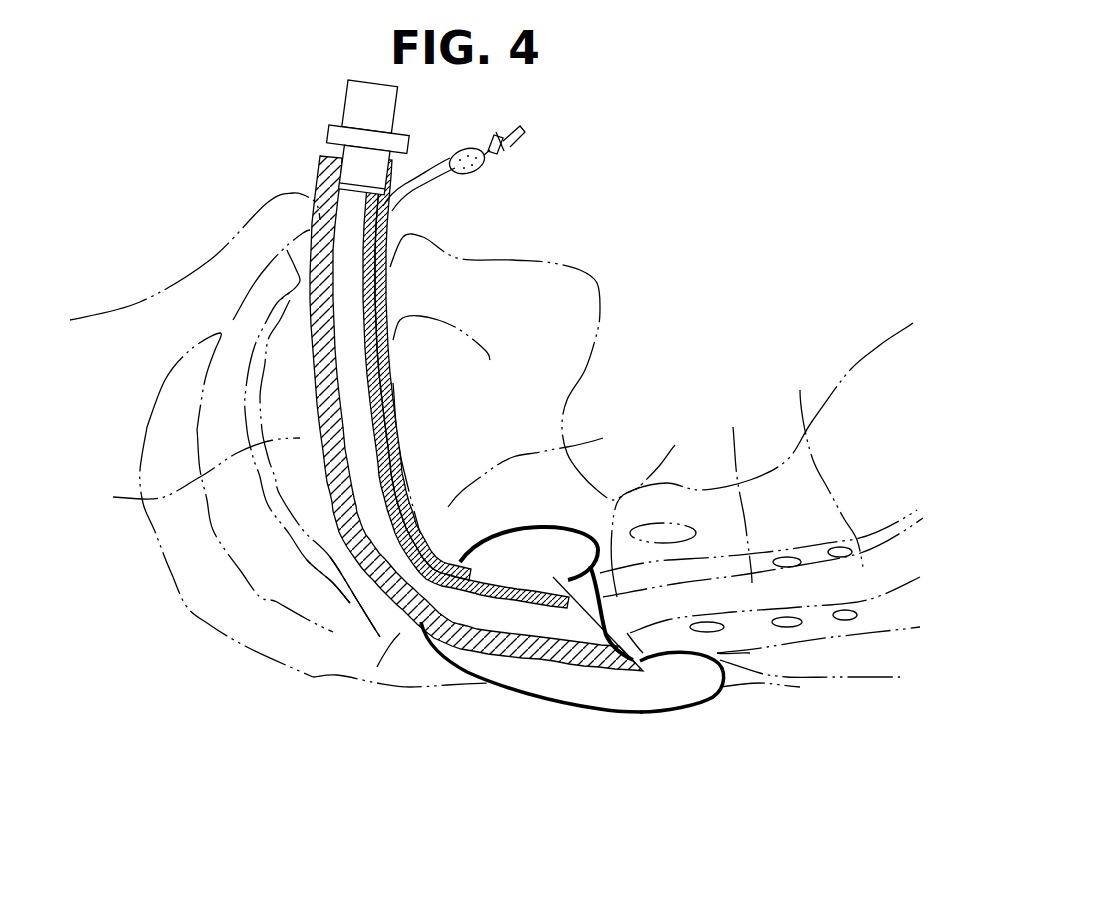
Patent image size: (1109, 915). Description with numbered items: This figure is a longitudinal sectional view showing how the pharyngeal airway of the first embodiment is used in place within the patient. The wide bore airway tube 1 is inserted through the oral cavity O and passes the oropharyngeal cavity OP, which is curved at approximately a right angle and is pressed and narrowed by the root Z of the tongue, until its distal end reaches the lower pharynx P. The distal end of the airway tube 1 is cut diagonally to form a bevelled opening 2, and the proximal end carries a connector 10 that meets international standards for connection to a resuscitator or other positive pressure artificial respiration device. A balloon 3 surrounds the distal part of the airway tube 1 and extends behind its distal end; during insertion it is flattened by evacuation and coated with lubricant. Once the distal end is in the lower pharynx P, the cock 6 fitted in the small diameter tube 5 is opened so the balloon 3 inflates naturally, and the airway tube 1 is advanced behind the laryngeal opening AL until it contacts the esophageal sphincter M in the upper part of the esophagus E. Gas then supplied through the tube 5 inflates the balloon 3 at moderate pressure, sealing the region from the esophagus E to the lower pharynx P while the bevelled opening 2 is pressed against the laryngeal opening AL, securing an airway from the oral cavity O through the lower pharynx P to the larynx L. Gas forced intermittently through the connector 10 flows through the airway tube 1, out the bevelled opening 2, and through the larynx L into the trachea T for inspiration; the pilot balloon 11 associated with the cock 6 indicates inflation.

The airway tube 1 is at (345, 512).
The bevelled opening 2 is at (592, 583).
The balloon 3 is at (485, 681).
The tube 5 is at (425, 185).
The cock 6 is at (500, 152).
The connector 10 is at (353, 110).
The pilot balloon 11 is at (476, 168).
The oral cavity O is at (193, 477).
The oropharyngeal cavity OP is at (336, 675).
The root of the tongue Z is at (535, 459).
The laryngeal opening AL is at (670, 453).
The larynx L is at (742, 485).
The trachea T is at (826, 459).
The esophagus E is at (867, 650).
The esophageal sphincter M is at (750, 653).
The lower pharynx P is at (637, 687).